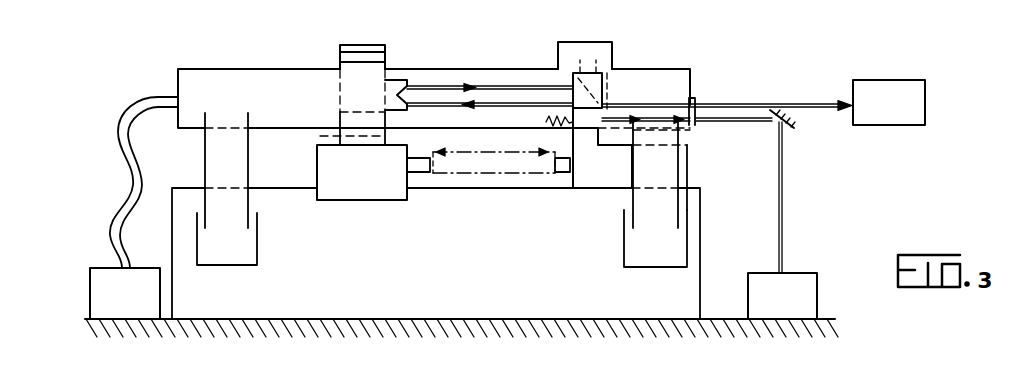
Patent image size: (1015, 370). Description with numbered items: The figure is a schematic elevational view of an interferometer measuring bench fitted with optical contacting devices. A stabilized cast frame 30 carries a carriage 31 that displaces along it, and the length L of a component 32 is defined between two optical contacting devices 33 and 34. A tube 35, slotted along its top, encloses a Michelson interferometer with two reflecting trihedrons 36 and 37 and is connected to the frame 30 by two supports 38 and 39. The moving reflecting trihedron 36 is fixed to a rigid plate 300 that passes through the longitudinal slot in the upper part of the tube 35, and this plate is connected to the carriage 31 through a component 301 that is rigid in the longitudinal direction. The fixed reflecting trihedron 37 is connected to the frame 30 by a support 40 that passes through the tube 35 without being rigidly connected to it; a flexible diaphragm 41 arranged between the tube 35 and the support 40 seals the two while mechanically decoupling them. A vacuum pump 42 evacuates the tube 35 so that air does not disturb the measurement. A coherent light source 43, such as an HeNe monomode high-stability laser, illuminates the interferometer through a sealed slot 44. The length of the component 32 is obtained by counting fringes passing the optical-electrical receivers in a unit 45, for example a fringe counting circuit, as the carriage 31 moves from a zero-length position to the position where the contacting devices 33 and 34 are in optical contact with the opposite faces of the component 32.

The frame 30 is at (298, 320).
The carriage 31 is at (377, 199).
The component 32 is at (484, 174).
The optical contacting device 33 is at (563, 173).
The optical contacting device 34 is at (420, 173).
The tube 35 is at (278, 70).
The moving reflecting trihedron 36 is at (400, 80).
The fixed reflecting trihedron 37 is at (598, 63).
The support 38 is at (214, 170).
The support 39 is at (633, 210).
The support 40 is at (585, 133).
The flexible diaphragm 41 is at (546, 119).
The vacuum pump 42 is at (98, 268).
The coherent light source 43 is at (815, 273).
The sealed slot 44 is at (693, 97).
The unit 45 is at (895, 82).
The rigid plate 300 is at (340, 100).
The component 301 is at (366, 54).